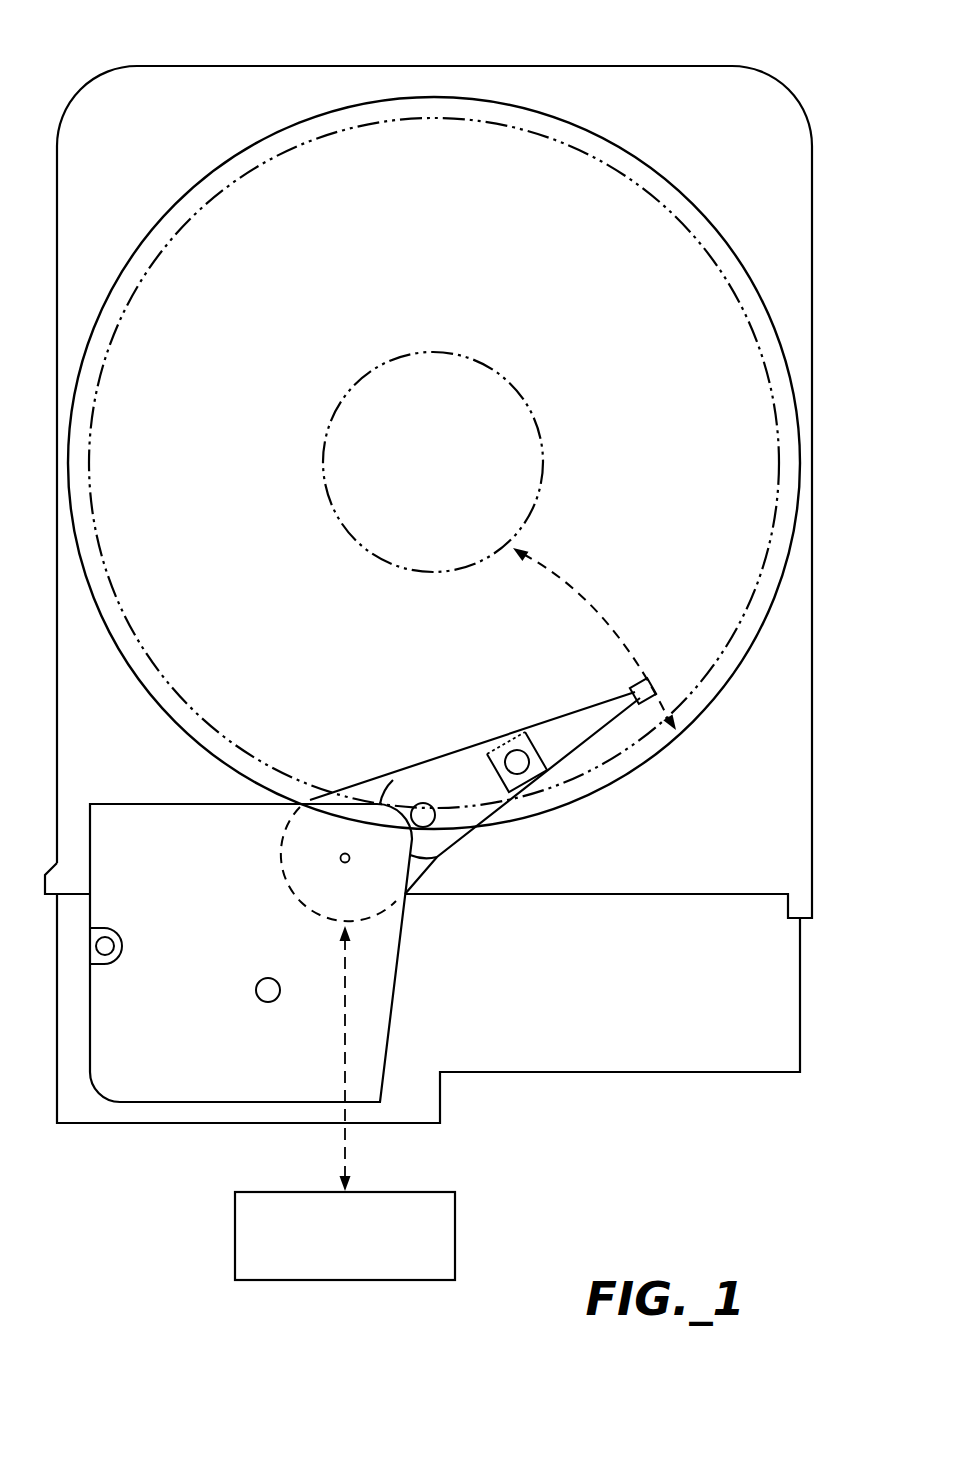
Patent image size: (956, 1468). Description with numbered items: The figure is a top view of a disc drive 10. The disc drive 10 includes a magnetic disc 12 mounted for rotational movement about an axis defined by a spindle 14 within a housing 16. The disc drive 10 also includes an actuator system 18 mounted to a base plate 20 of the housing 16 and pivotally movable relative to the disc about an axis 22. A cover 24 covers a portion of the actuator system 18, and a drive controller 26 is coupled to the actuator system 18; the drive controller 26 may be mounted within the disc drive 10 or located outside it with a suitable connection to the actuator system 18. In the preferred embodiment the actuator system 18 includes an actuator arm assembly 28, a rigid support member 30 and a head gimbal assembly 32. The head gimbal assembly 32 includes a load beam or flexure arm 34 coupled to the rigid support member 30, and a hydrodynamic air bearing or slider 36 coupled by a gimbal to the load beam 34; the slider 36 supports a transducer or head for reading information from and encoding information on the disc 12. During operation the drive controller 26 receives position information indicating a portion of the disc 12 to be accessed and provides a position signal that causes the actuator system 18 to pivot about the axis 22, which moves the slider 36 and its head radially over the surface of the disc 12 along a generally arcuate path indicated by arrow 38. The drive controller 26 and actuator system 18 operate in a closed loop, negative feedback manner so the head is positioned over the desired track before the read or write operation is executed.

The disc drive 10 is at (185, 44).
The magnetic disc 12 is at (421, 261).
The spindle 14 is at (421, 470).
The housing 16 is at (812, 226).
The actuator system 18 is at (483, 768).
The base plate 20 is at (703, 1072).
The axis 22 is at (340, 858).
The cover 24 is at (195, 1068).
The drive controller 26 is at (455, 1227).
The actuator arm assembly 28 is at (339, 786).
The rigid support member 30 is at (453, 837).
The head gimbal assembly 32 is at (590, 700).
The load beam 34 is at (555, 737).
The slider 36 is at (638, 681).
The arrow 38 is at (563, 582).